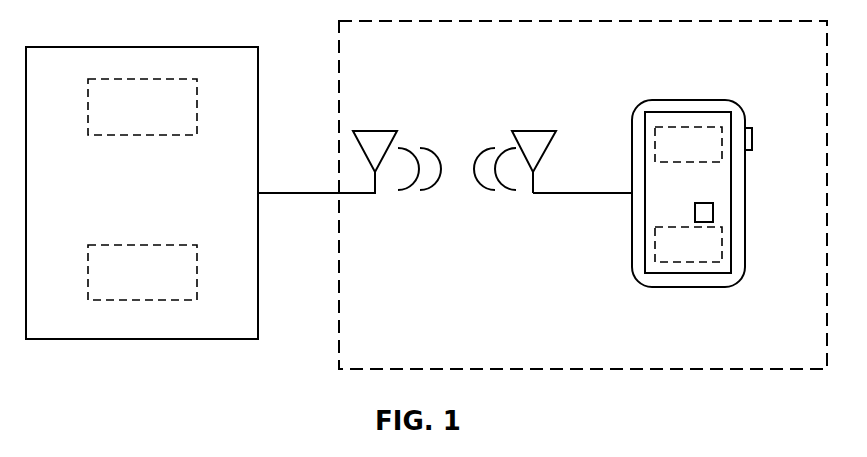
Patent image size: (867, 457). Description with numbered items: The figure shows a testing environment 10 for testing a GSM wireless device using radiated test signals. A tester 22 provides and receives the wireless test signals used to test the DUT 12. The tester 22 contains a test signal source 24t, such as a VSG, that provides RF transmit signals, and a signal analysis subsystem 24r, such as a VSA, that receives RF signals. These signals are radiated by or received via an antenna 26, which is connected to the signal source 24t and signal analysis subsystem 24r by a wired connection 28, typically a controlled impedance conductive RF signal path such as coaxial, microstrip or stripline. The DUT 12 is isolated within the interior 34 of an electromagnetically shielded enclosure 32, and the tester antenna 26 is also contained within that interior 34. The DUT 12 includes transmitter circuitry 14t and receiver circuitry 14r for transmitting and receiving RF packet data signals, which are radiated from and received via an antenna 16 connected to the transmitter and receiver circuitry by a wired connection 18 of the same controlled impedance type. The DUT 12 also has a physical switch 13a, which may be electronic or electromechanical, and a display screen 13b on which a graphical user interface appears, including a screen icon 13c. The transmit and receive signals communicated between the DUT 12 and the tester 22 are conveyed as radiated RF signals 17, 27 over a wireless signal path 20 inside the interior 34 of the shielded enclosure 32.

The testing environment 10 is at (209, 375).
The DUT 12 is at (690, 99).
The physical switch 13a is at (752, 142).
The display screen 13b is at (732, 187).
The screen icon 13c is at (715, 215).
The transmitter circuitry 14t is at (724, 153).
The receiver circuitry 14r is at (723, 250).
The antenna 16 is at (552, 128).
The radiated RF signals 17 is at (488, 147).
The wired connection 18 is at (558, 193).
The wireless signal path 20 is at (445, 217).
The tester 22 is at (237, 46).
The test signal source 24t is at (135, 136).
The signal analysis subsystem 24r is at (142, 245).
The antenna 26 is at (374, 129).
The radiated RF signals 27 is at (427, 150).
The wired connection 28 is at (273, 192).
The electromagnetically shielded enclosure 32 is at (605, 369).
The interior 34 is at (586, 340).